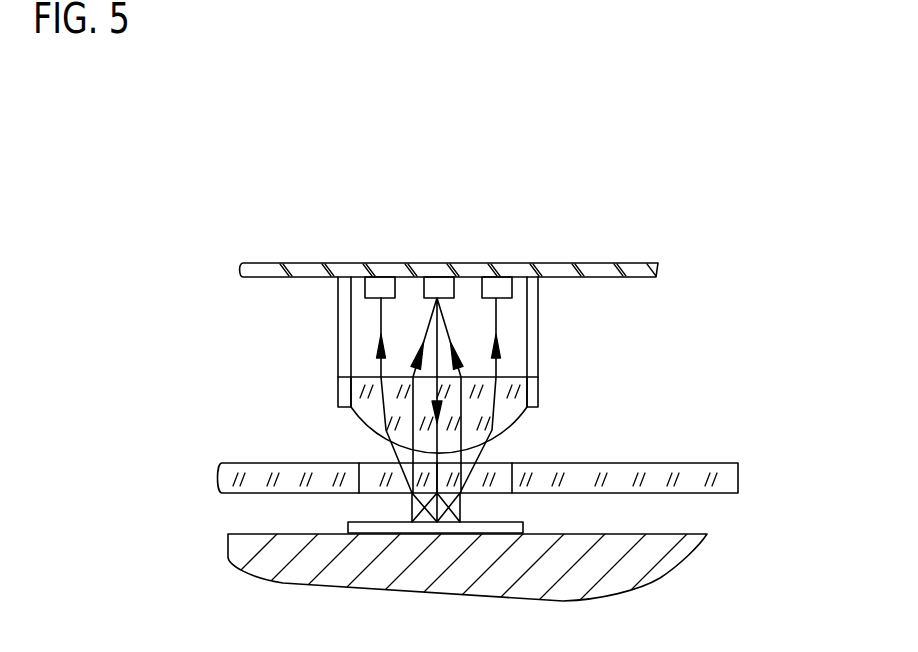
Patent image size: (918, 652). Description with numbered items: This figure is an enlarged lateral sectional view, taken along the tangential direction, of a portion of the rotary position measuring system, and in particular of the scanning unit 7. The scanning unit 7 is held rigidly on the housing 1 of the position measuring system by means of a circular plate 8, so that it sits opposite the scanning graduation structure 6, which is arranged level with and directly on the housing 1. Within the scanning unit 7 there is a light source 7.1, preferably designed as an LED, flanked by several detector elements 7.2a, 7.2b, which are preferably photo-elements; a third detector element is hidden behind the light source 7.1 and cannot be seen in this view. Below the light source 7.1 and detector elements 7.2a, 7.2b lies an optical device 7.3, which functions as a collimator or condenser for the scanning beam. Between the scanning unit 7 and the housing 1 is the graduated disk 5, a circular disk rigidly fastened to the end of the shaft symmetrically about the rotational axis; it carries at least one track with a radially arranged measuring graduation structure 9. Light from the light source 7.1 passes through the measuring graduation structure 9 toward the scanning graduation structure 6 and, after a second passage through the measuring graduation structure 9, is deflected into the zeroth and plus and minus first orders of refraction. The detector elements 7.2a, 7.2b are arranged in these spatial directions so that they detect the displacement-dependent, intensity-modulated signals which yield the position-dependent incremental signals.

The housing 1 is at (642, 560).
The graduated disk 5 is at (657, 478).
The scanning graduation structure 6 is at (523, 522).
The scanning unit 7 is at (338, 369).
The light source 7.1 is at (437, 288).
The detector element 7.2a is at (380, 288).
The detector element 7.2b is at (500, 288).
The optical device 7.3 is at (540, 375).
The circular plate 8 is at (648, 263).
The measuring graduation structure 9 is at (502, 463).